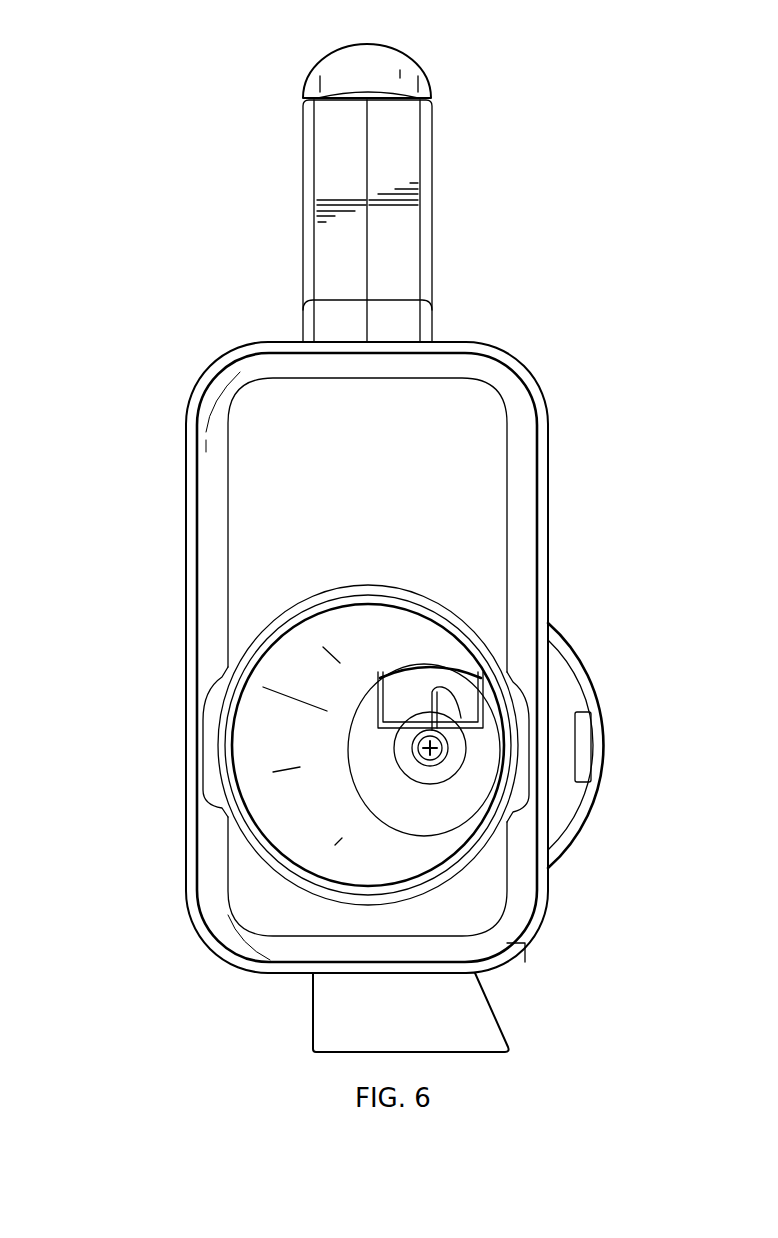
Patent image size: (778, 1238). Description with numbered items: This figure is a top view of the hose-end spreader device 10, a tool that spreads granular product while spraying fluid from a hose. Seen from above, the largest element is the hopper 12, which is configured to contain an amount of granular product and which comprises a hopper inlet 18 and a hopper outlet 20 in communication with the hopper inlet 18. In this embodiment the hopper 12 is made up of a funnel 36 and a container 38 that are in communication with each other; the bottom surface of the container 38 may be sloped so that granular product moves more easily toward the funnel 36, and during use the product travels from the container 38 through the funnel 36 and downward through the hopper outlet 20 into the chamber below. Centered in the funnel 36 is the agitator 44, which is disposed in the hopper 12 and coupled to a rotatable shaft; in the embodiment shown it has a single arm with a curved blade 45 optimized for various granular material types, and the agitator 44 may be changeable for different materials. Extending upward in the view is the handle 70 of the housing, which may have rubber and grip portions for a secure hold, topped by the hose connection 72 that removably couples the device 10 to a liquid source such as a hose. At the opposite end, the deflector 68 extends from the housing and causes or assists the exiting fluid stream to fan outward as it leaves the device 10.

The hose-end spreader device 10 is at (130, 92).
The hopper 12 is at (229, 356).
The hopper inlet 18 is at (520, 392).
The hopper outlet 20 is at (440, 680).
The funnel 36 is at (228, 778).
The container 38 is at (186, 560).
The agitator 44 is at (418, 782).
The curved blade 45 is at (427, 703).
The deflector 68 is at (313, 1018).
The handle 70 is at (303, 205).
The hose connection 72 is at (386, 44).